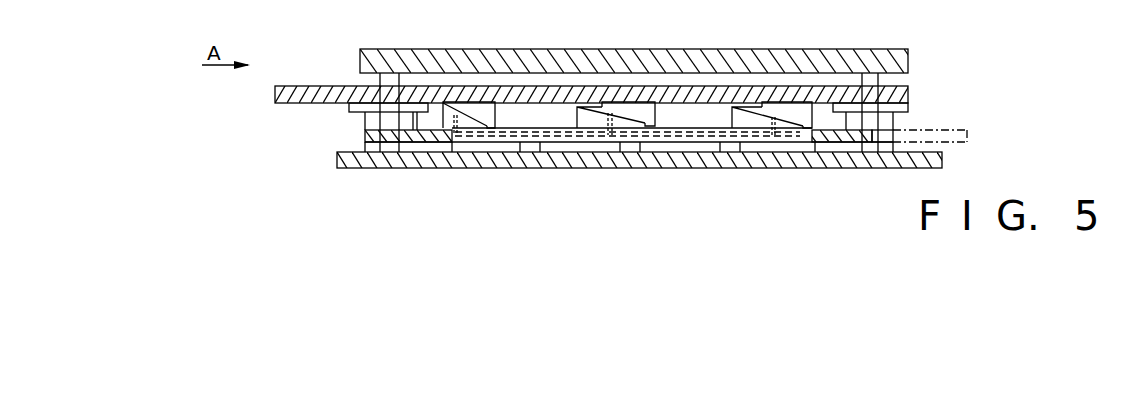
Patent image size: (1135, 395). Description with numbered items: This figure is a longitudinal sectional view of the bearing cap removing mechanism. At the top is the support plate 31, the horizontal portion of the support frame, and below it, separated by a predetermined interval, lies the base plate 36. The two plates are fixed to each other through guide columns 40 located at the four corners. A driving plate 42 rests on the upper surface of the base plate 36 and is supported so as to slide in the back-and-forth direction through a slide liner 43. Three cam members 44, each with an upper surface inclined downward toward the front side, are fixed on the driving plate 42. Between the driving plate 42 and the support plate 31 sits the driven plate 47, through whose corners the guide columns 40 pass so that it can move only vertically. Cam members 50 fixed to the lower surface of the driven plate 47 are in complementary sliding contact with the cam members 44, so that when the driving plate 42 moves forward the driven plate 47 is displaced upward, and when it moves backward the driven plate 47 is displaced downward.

The support plate 31 is at (689, 50).
The driven plate 47 is at (727, 86).
The base plate 36 is at (683, 168).
The guide columns 40 is at (381, 77).
The driving plate 42 is at (365, 133).
The slide liner 43 is at (538, 146).
The cam members 44 is at (437, 123).
The cam members 50 is at (632, 105).